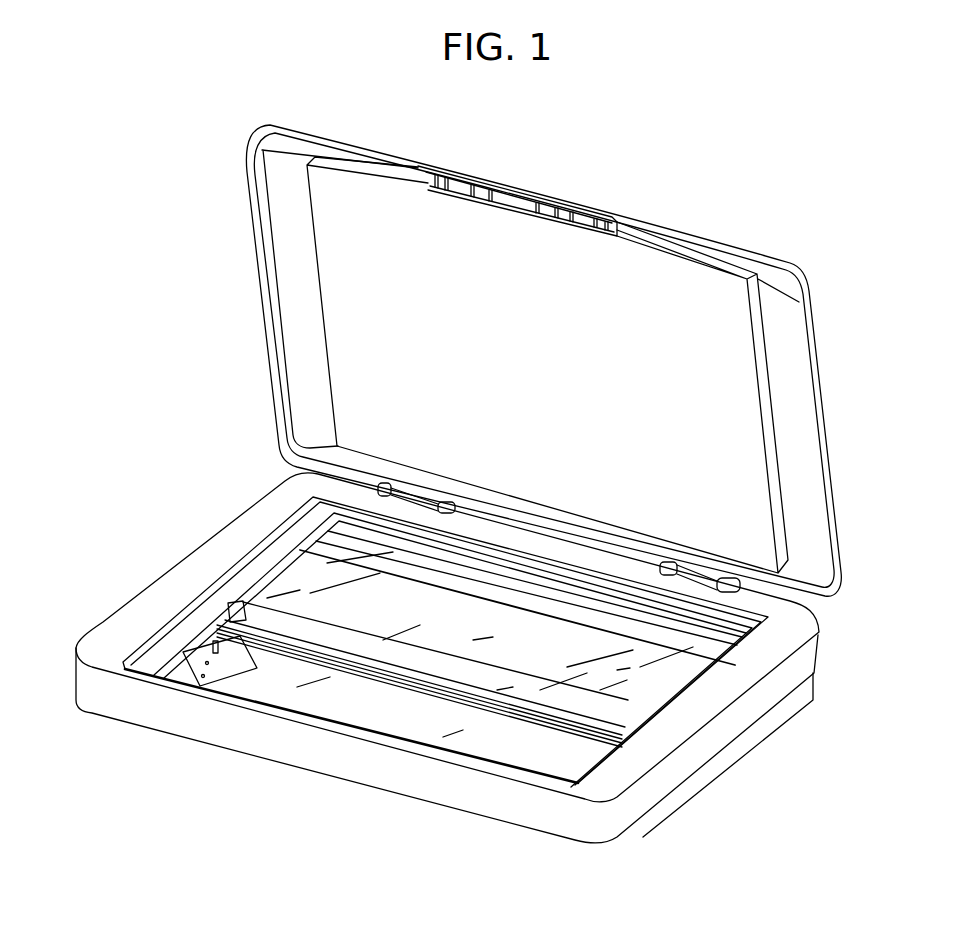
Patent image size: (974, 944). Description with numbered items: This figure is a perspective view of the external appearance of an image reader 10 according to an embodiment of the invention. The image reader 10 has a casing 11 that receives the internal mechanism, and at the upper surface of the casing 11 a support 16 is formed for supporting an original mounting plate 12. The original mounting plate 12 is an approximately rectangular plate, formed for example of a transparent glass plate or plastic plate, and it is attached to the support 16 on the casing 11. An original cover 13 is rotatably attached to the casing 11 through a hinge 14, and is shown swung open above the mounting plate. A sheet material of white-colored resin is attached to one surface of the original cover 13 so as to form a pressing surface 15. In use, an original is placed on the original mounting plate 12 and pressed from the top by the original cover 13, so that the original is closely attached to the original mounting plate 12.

The image reader 10 is at (586, 106).
The casing 11 is at (822, 657).
The original mounting plate 12 is at (482, 760).
The original cover 13 is at (824, 372).
The hinge 14 is at (313, 472).
The pressing surface 15 is at (682, 300).
The support 16 is at (693, 717).